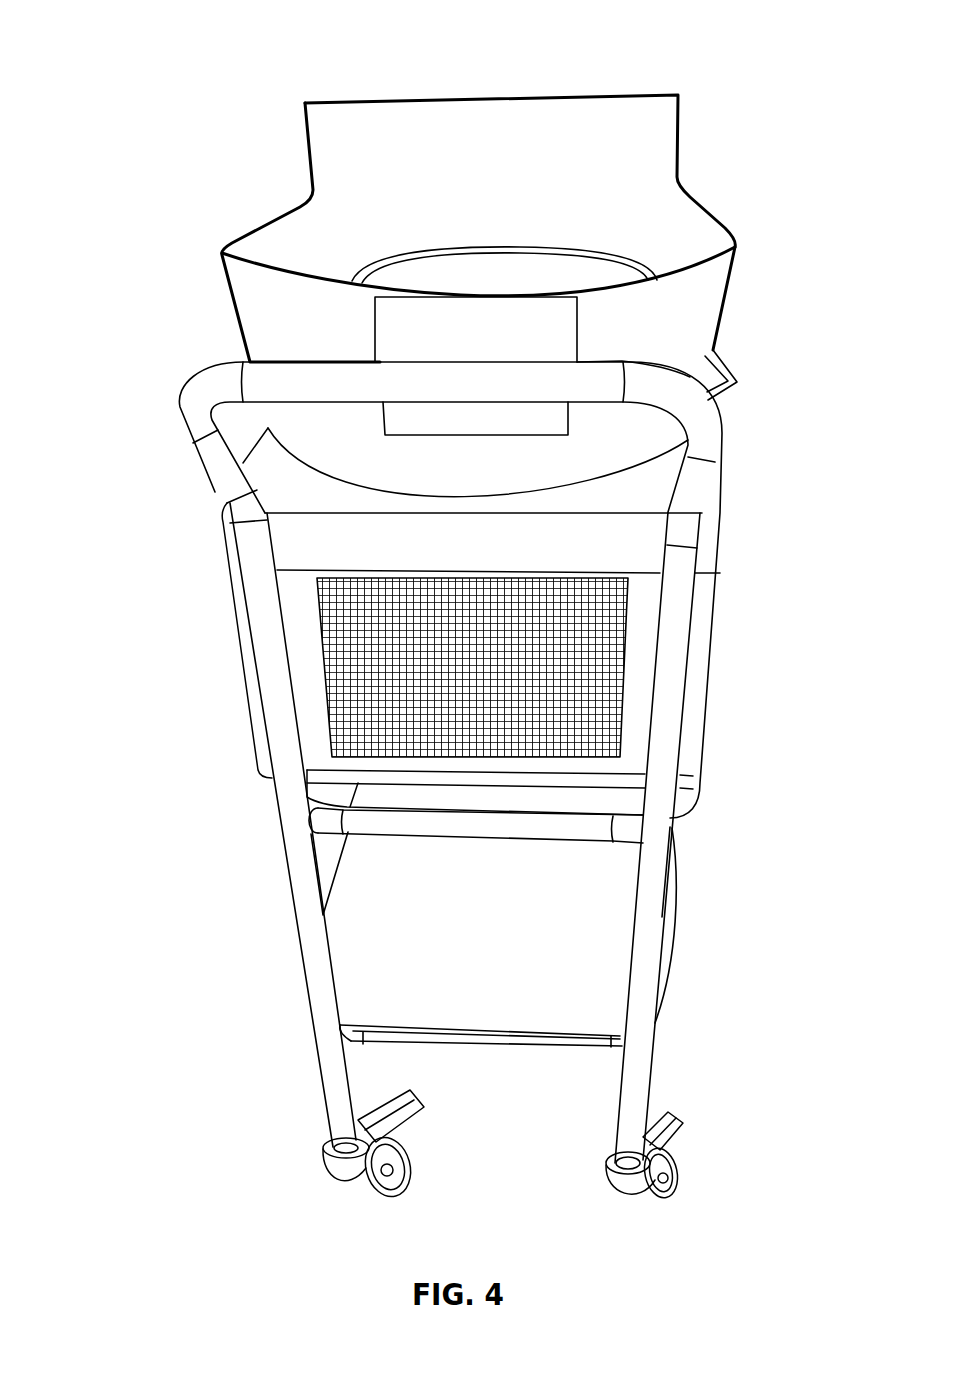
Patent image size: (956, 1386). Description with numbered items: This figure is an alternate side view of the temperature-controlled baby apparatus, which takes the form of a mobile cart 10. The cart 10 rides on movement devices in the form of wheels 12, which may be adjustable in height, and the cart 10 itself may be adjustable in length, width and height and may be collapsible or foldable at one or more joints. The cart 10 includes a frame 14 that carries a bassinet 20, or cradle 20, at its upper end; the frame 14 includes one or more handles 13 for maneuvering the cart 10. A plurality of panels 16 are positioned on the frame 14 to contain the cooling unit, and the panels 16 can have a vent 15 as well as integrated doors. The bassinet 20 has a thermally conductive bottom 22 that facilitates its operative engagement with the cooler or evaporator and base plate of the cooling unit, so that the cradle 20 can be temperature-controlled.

The cart 10 is at (119, 244).
The wheels 12 is at (676, 1168).
The handle 13 is at (676, 400).
The frame 14 is at (650, 832).
The vent 15 is at (552, 667).
The panels 16 is at (303, 535).
The bassinet 20 is at (680, 145).
The thermally conductive bottom 22 is at (500, 278).